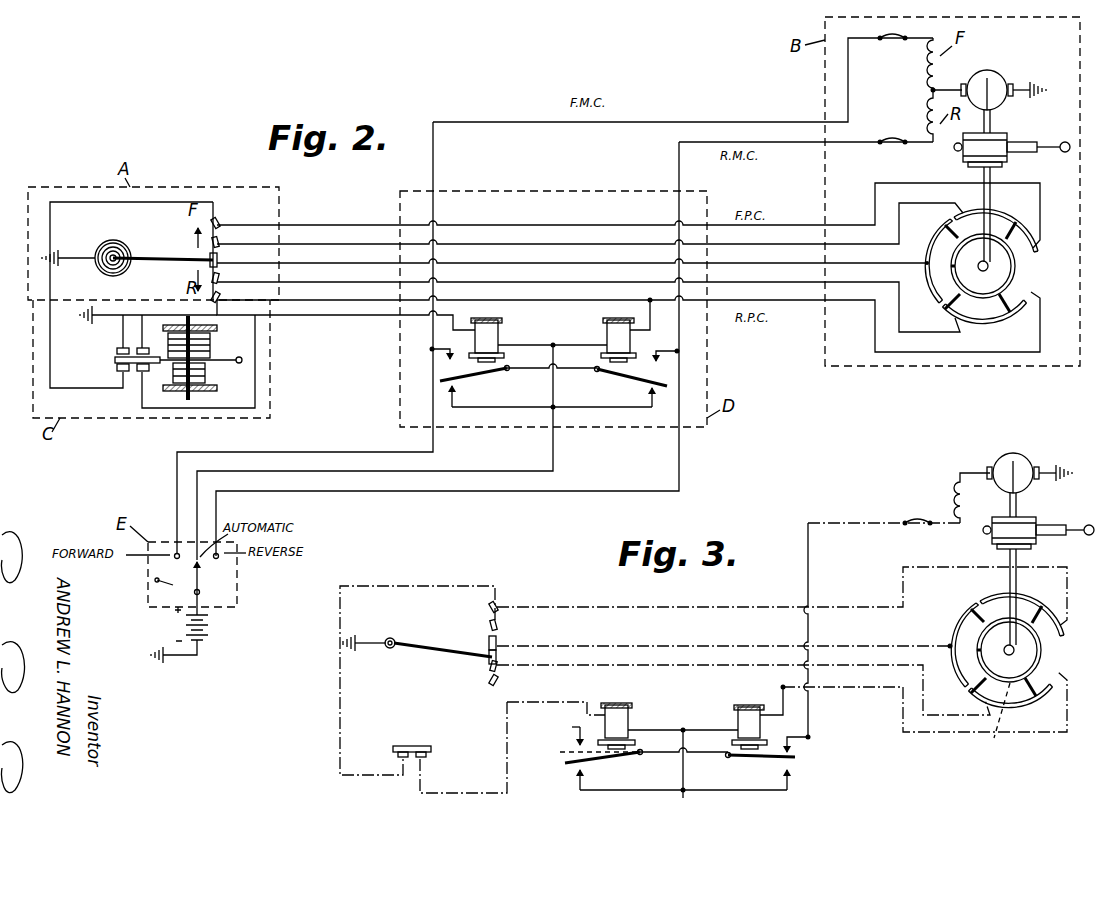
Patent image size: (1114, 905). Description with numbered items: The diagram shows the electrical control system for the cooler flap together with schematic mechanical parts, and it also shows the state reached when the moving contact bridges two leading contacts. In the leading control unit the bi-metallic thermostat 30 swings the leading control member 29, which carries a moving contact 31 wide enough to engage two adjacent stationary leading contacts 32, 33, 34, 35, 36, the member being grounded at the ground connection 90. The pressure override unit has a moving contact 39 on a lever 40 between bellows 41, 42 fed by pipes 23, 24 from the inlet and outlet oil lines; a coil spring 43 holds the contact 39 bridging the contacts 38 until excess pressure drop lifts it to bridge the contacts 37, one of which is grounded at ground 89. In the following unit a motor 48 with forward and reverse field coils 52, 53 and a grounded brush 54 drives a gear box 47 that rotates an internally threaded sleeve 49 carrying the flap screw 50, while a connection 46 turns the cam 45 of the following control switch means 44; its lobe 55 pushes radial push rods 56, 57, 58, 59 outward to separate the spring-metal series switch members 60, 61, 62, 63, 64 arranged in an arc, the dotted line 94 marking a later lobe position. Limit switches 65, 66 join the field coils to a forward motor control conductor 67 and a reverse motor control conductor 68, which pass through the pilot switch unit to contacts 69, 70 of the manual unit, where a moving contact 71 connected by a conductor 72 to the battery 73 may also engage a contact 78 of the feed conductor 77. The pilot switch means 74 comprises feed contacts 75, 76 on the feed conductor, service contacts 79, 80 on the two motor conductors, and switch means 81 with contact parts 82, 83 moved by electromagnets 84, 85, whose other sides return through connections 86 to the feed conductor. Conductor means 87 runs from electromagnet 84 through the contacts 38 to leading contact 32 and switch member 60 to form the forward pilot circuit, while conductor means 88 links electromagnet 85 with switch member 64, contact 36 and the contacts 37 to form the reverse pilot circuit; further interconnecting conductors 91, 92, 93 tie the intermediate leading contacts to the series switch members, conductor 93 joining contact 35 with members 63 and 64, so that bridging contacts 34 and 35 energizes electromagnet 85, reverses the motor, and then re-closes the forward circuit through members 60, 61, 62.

In FIG. 2, the pipe 23 is at (186, 396).
In FIG. 2, the pipe 24 is at (188, 318).
In FIG. 2, the leading control member 29 is at (172, 257).
In FIG. 3, the leading control member 29 is at (440, 642).
In FIG. 2, the bi-metallic thermostat 30 is at (125, 244).
In FIG. 2, the moving contact 31 is at (208, 262).
In FIG. 3, the moving contact 31 is at (487, 660).
In FIG. 2, the stationary leading contact 32 is at (218, 221).
In FIG. 2, the stationary leading contact 33 is at (220, 241).
In FIG. 2, the stationary leading contact 34 is at (220, 260).
In FIG. 3, the stationary leading contact 34 is at (487, 643).
In FIG. 2, the stationary leading contact 35 is at (220, 278).
In FIG. 3, the stationary leading contact 35 is at (498, 664).
In FIG. 2, the stationary leading contact 36 is at (220, 297).
In FIG. 2, the pair of contacts 37 is at (122, 348).
In FIG. 2, the pair of contacts 38 is at (137, 372).
In FIG. 3, the pair of contacts 38 is at (398, 755).
In FIG. 2, the moving contact 39 is at (115, 362).
In FIG. 3, the moving contact 39 is at (413, 745).
In FIG. 2, the lever 40 is at (242, 358).
In FIG. 2, the bellows 41 is at (205, 372).
In FIG. 2, the bellows 42 is at (158, 342).
In FIG. 2, the coil spring 43 is at (210, 340).
In FIG. 2, the following control switch means 44 is at (1020, 272).
In FIG. 3, the following control switch means 44 is at (1050, 640).
In FIG. 2, the cam 45 is at (1000, 266).
In FIG. 3, the cam 45 is at (1025, 652).
In FIG. 2, the connection 46 is at (992, 172).
In FIG. 2, the gear box 47 is at (963, 150).
In FIG. 3, the gear box 47 is at (1022, 518).
In FIG. 2, the motor 48 is at (990, 78).
In FIG. 3, the motor 48 is at (1014, 460).
In FIG. 2, the internally threaded sleeve 49 is at (1020, 142).
In FIG. 3, the internally threaded sleeve 49 is at (1052, 526).
In FIG. 2, the screw 50 is at (1064, 142).
In FIG. 3, the screw 50 is at (1090, 525).
In FIG. 2, the field coil 52 is at (925, 68).
In FIG. 2, the field coil 53 is at (925, 108).
In FIG. 3, the field coil 53 is at (956, 484).
In FIG. 2, the ground 54 is at (1030, 84).
In FIG. 3, the ground 54 is at (1058, 467).
In FIG. 2, the lobe 55 is at (955, 270).
In FIG. 3, the lobe 55 is at (978, 650).
In FIG. 2, the push rod 56 is at (1024, 252).
In FIG. 2, the push rod 57 is at (938, 240).
In FIG. 3, the push rod 57 is at (966, 620).
In FIG. 2, the push rod 58 is at (950, 308).
In FIG. 3, the push rod 58 is at (975, 692).
In FIG. 2, the push rod 59 is at (1002, 292).
In FIG. 3, the push rod 59 is at (1035, 688).
In FIG. 2, the series switch member 60 is at (1028, 230).
In FIG. 3, the series switch member 60 is at (1054, 618).
In FIG. 2, the series switch member 61 is at (1000, 220).
In FIG. 3, the series switch member 61 is at (1030, 604).
In FIG. 2, the series switch member 62 is at (950, 224).
In FIG. 3, the series switch member 62 is at (976, 608).
In FIG. 2, the series switch member 63 is at (935, 297).
In FIG. 3, the series switch member 63 is at (962, 690).
In FIG. 2, the series switch member 64 is at (1014, 320).
In FIG. 3, the series switch member 64 is at (1042, 700).
In FIG. 2, the limit switch 65 is at (890, 40).
In FIG. 2, the limit switch 66 is at (890, 140).
In FIG. 3, the limit switch 66 is at (915, 520).
In FIG. 2, the forward motor control conductor 67 is at (345, 452).
In FIG. 2, the reverse motor control conductor 68 is at (679, 168).
In FIG. 3, the reverse motor control conductor 68 is at (830, 522).
In FIG. 2, the contact 69 is at (175, 557).
In FIG. 2, the contact 70 is at (218, 557).
In FIG. 2, the moving contact 71 is at (165, 583).
In FIG. 2, the conductor 72 is at (200, 594).
In FIG. 2, the battery 73 is at (186, 627).
In FIG. 2, the pilot switch means 74 is at (538, 384).
In FIG. 3, the pilot switch means 74 is at (683, 722).
In FIG. 2, the feed contact 75 is at (448, 396).
In FIG. 3, the feed contact 75 is at (578, 782).
In FIG. 2, the feed contact 76 is at (658, 395).
In FIG. 3, the feed contact 76 is at (795, 780).
In FIG. 2, the feed conductor 77 is at (553, 462).
In FIG. 3, the feed conductor 77 is at (683, 772).
In FIG. 2, the contact 78 is at (197, 560).
In FIG. 2, the service contact 79 is at (446, 360).
In FIG. 3, the service contact 79 is at (578, 735).
In FIG. 2, the service contact 80 is at (660, 358).
In FIG. 3, the service contact 80 is at (792, 749).
In FIG. 2, the switch means 81 is at (562, 372).
In FIG. 3, the switch means 81 is at (655, 752).
In FIG. 2, the contact part 82 is at (462, 378).
In FIG. 3, the contact part 82 is at (560, 752).
In FIG. 2, the contact part 83 is at (628, 379).
In FIG. 3, the contact part 83 is at (758, 758).
In FIG. 2, the electromagnet 84 is at (492, 338).
In FIG. 3, the electromagnet 84 is at (618, 708).
In FIG. 2, the electromagnet 85 is at (616, 336).
In FIG. 3, the electromagnet 85 is at (752, 706).
In FIG. 2, the connections 86 is at (550, 344).
In FIG. 3, the connections 86 is at (700, 730).
In FIG. 2, the conductor means 87 is at (28, 275).
In FIG. 3, the conductor means 87 is at (757, 607).
In FIG. 2, the conductor means 88 is at (219, 302).
In FIG. 3, the conductor means 88 is at (846, 690).
In FIG. 2, the ground 89 is at (92, 318).
In FIG. 2, the ground connection 90 is at (95, 252).
In FIG. 3, the ground connection 90 is at (368, 638).
In FIG. 2, the pilot circuit wire 91 is at (503, 225).
In FIG. 2, the pilot circuit wire 92 is at (528, 244).
In FIG. 3, the pilot circuit wire 92 is at (620, 636).
In FIG. 2, the interconnecting conductor 93 is at (552, 263).
In FIG. 3, the interconnecting conductor 93 is at (660, 665).
In FIG. 3, the dotted line 94 is at (997, 710).